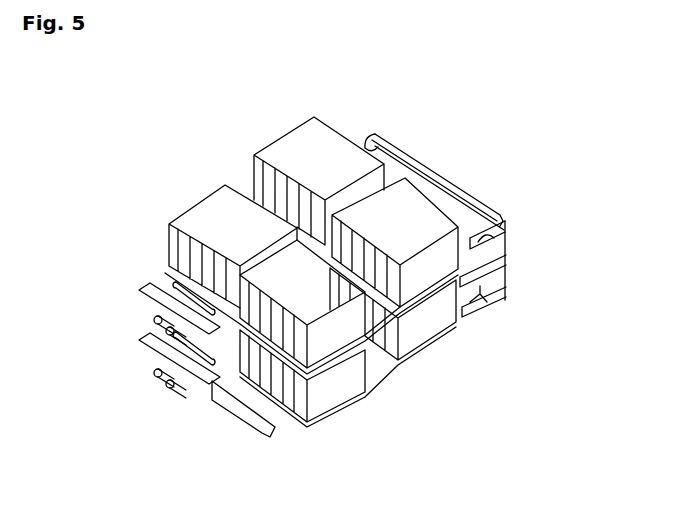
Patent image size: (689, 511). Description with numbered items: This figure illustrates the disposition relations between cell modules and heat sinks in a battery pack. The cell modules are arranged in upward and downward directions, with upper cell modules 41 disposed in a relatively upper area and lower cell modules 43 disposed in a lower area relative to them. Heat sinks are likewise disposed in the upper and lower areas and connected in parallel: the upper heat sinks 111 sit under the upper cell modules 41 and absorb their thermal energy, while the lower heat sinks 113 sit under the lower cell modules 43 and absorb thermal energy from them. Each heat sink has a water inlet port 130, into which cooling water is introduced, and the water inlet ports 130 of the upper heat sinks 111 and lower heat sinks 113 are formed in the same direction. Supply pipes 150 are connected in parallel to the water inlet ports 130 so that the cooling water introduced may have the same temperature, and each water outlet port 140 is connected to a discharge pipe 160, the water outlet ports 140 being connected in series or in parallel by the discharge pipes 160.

The upper cell module 41 is at (440, 216).
The lower cell module 43 is at (443, 316).
The upper heat sink 111 is at (500, 229).
The lower heat sink 113 is at (482, 303).
The water inlet port 130 is at (148, 292).
The water outlet port 140 is at (366, 146).
The supply pipe 150 is at (165, 370).
The discharge pipe 160 is at (398, 152).